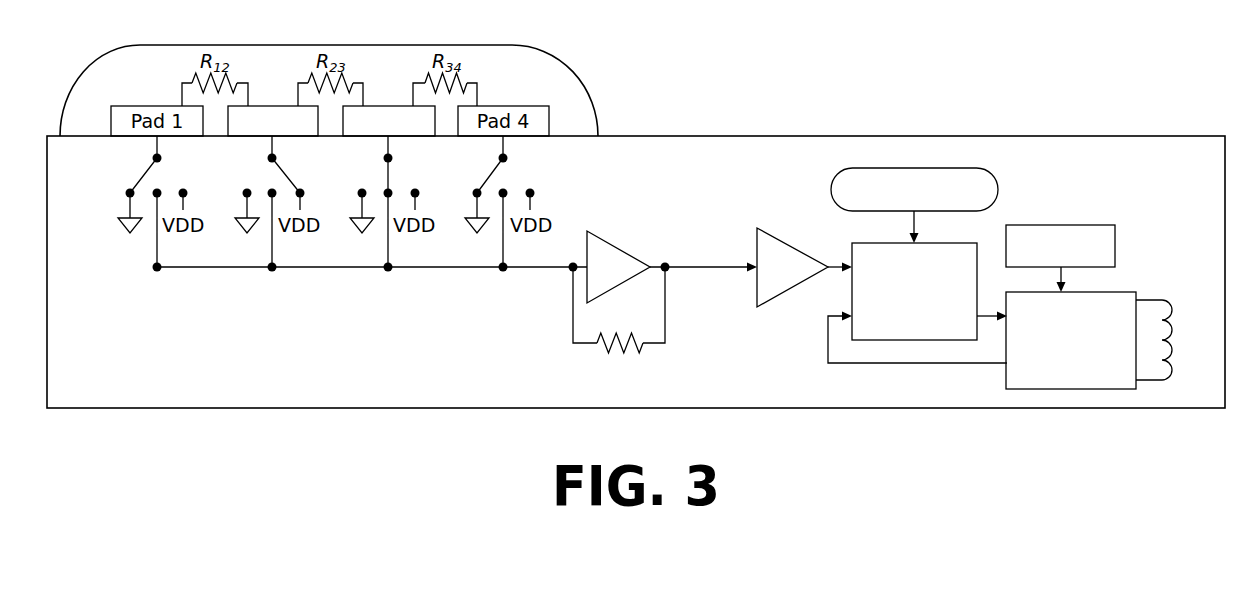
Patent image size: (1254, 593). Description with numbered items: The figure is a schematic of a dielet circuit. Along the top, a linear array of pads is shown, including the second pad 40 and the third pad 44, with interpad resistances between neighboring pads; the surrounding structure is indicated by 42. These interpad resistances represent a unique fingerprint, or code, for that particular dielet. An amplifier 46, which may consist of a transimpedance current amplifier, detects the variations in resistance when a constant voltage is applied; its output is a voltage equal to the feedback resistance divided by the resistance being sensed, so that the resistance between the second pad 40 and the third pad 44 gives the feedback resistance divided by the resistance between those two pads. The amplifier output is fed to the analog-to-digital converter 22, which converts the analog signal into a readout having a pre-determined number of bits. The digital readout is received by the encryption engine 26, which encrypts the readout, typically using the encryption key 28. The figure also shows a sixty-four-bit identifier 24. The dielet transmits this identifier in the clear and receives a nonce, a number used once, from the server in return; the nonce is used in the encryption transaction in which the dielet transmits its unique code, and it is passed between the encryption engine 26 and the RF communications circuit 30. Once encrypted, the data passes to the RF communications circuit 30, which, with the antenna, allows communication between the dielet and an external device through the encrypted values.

The lid / cover of the device housing 42 is at (513, 45).
The pad 2 40 is at (270, 105).
The pad 3 44 is at (387, 105).
The amplifier 46 is at (621, 247).
The analog-to-digital converter 22 is at (797, 248).
The encryption key 28 is at (989, 173).
The encryption engine 26 is at (962, 243).
The identifier 24 is at (1116, 226).
The RF communications circuit 30 is at (1137, 292).